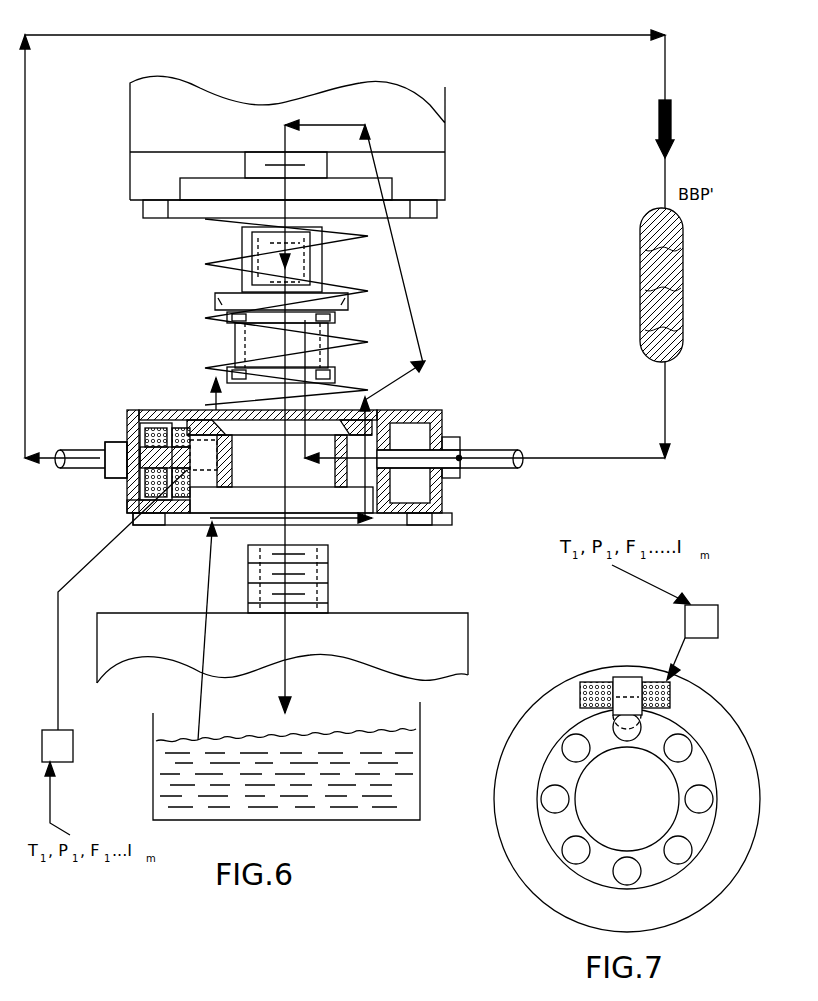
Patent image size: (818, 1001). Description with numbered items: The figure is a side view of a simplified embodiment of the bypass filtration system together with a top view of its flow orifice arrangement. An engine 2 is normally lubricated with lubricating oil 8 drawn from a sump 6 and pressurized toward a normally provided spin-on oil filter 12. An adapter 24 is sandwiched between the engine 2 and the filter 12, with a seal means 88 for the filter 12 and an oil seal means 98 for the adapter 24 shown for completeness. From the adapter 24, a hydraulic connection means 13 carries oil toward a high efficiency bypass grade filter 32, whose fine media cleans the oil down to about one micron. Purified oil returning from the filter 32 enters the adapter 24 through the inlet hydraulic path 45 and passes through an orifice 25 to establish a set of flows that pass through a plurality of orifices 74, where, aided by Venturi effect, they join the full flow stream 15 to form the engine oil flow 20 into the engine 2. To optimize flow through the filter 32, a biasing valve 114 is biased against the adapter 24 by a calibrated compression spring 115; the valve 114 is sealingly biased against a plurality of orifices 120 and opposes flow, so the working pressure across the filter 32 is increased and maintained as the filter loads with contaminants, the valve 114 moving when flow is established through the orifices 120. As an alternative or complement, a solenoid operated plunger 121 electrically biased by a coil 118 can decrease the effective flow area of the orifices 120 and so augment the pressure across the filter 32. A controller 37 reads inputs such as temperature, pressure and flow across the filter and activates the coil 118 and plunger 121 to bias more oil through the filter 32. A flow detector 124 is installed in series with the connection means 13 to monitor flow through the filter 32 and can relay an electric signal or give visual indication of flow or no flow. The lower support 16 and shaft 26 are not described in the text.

In FIG. 6, the engine 2 is at (405, 614).
In FIG. 6, the sump 6 is at (421, 715).
In FIG. 6, the lubricating oil 8 is at (315, 740).
In FIG. 6, the spin-on oil filter 12 is at (447, 128).
In FIG. 6, the hydraulic connection means 13 is at (275, 35).
In FIG. 6, the flow 15 is at (330, 122).
In FIG. 6, the lower support 16 is at (330, 590).
In FIG. 6, the engine oil flow 20 is at (290, 690).
In FIG. 6, the adapter 24 is at (289, 448).
In FIG. 7, the adapter 24 is at (730, 882).
In FIG. 6, the orifice 25 is at (330, 462).
In FIG. 6, the shaft 26 is at (323, 262).
In FIG. 6, the high efficiency bypass grade filter 32 is at (684, 300).
In FIG. 6, the controller 37 is at (58, 765).
In FIG. 7, the controller 37 is at (719, 622).
In FIG. 6, the inlet hydraulic path 45 is at (418, 463).
In FIG. 6, the plurality of orifices 74 is at (360, 320).
In FIG. 6, the seal means 88 is at (420, 220).
In FIG. 6, the oil seal means 98 is at (420, 527).
In FIG. 6, the biasing valve 114 is at (187, 437).
In FIG. 6, the calibrated compression spring 115 is at (205, 262).
In FIG. 6, the coil 118 is at (127, 418).
In FIG. 7, the coil 118 is at (586, 681).
In FIG. 7, the plurality of orifices 120 is at (545, 772).
In FIG. 6, the solenoid operated plunger 121 is at (125, 441).
In FIG. 7, the solenoid operated plunger 121 is at (632, 676).
In FIG. 6, the flow detector 124 is at (672, 120).